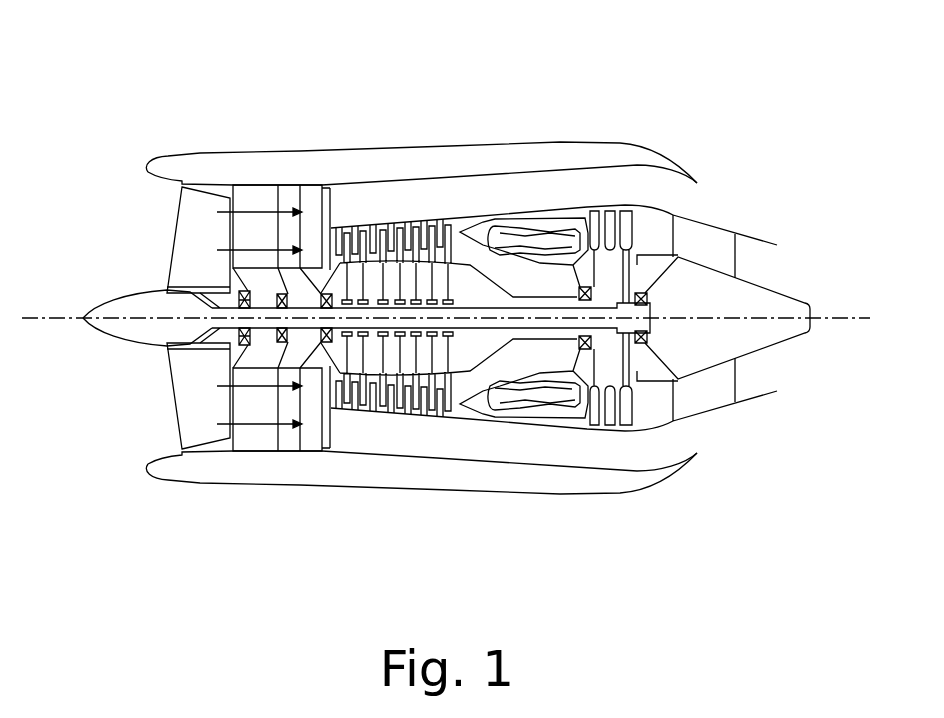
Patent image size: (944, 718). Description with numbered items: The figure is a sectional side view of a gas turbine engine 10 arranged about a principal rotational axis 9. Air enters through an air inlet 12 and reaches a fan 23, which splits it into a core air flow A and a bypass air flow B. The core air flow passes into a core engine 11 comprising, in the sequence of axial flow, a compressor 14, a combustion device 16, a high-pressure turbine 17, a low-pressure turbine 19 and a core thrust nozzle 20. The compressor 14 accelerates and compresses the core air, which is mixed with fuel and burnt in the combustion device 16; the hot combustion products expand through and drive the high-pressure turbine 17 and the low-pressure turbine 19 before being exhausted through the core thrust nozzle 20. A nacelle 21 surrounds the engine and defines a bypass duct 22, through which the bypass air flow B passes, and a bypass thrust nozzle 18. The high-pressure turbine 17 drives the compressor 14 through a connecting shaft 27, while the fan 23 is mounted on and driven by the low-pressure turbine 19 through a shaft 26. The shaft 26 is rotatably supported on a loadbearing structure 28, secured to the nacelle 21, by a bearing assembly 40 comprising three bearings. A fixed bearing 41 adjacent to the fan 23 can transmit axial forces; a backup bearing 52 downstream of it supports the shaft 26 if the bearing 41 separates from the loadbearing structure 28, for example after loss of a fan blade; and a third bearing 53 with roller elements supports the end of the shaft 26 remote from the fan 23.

The principal rotational axis 9 is at (47, 320).
The gas turbine engine 10 is at (128, 98).
The core engine 11 is at (462, 440).
The air inlet 12 is at (130, 258).
The compressor 14 is at (368, 198).
The combustion device 16 is at (536, 410).
The high-pressure turbine 17 is at (585, 410).
The bypass thrust nozzle 18 is at (710, 197).
The low-pressure turbine 19 is at (622, 425).
The core thrust nozzle 20 is at (799, 262).
The nacelle 21 is at (432, 167).
The bypass duct 22 is at (563, 201).
The fan 23 is at (188, 198).
The shaft 26 is at (476, 410).
The connecting shaft 27 is at (463, 250).
The loadbearing structure 28 is at (257, 197).
The bearing assembly 40 is at (247, 370).
The bearing 41 is at (240, 336).
The backup bearing 52 is at (285, 342).
The third bearing 53 is at (648, 343).